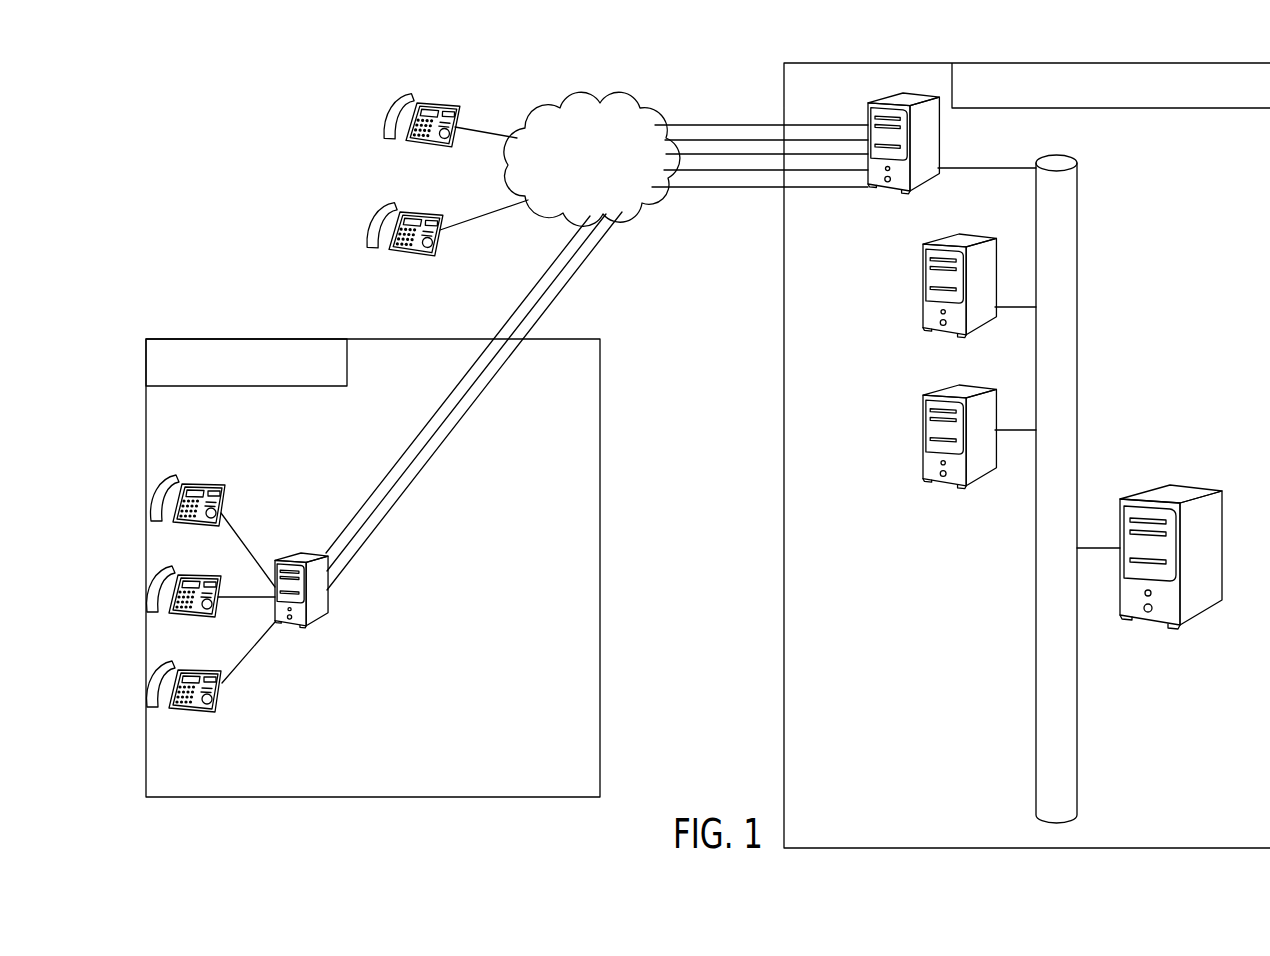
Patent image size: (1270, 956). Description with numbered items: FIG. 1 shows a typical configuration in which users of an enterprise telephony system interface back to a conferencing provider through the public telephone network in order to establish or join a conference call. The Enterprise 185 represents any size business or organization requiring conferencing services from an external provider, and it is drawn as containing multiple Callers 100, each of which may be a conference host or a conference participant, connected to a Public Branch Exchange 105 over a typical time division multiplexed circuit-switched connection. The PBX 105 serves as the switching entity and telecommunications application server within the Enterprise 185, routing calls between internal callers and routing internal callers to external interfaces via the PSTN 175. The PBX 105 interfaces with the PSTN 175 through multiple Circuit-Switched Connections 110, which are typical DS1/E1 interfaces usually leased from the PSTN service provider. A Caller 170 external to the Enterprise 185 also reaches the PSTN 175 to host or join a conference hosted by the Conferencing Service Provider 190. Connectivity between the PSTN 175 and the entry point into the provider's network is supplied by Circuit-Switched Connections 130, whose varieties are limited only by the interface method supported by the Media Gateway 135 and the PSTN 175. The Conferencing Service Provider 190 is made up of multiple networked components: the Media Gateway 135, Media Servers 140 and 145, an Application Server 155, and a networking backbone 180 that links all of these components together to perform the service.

The Caller 100 is at (203, 482).
The Public Branch Exchange 105 is at (300, 553).
The Circuit-Switched Connections 110 is at (421, 432).
The Circuit-Switched Connections 130 is at (722, 124).
The Media Gateway 135 is at (868, 112).
The Media Server 140 is at (923, 256).
The Media Server 145 is at (923, 409).
The Application Server 155 is at (1197, 487).
The Caller 170 is at (442, 100).
The PSTN 175 is at (573, 107).
The networking backbone 180 is at (1071, 505).
The Enterprise 185 is at (372, 339).
The Conferencing Service Provider 190 is at (1020, 62).